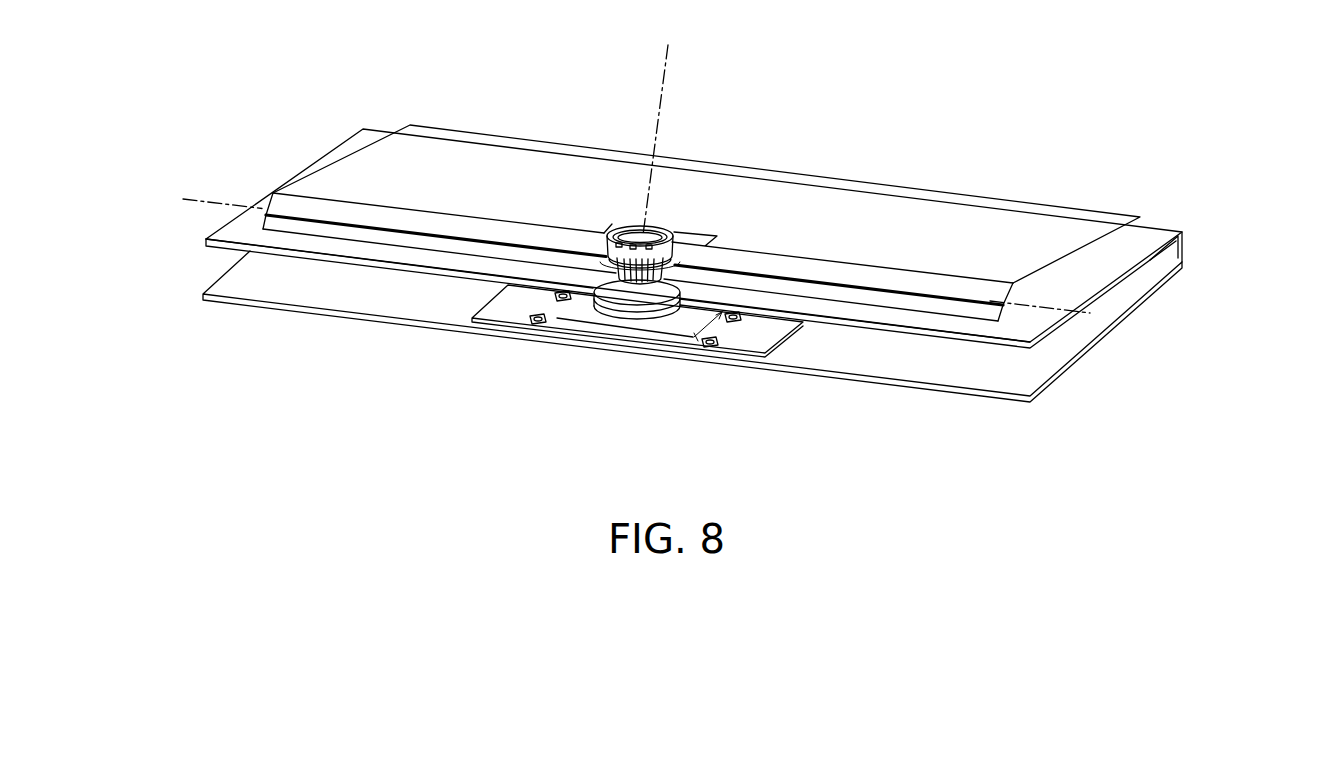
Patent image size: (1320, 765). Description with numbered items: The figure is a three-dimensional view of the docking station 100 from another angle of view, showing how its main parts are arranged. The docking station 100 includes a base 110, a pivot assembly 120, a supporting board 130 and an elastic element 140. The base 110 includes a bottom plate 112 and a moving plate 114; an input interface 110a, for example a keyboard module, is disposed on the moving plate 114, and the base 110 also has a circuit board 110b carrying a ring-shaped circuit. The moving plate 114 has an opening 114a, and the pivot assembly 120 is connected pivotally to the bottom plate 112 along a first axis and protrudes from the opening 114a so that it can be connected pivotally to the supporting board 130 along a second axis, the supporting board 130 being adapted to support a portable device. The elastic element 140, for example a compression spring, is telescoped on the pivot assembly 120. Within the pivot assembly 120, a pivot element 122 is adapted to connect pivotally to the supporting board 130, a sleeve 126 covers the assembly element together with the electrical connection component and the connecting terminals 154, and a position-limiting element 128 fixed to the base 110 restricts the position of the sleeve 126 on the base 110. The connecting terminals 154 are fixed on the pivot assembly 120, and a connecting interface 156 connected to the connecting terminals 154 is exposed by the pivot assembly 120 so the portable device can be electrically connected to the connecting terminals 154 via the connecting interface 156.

The docking station 100 is at (1137, 463).
The base 110 is at (733, 281).
The input interface 110a is at (1068, 270).
The circuit board 110b is at (756, 348).
The bottom plate 112 is at (692, 342).
The moving plate 114 is at (709, 267).
The opening 114a is at (660, 274).
The pivot assembly 120 is at (652, 262).
The pivot element 122 is at (633, 280).
The sleeve 126 is at (640, 260).
The position-limiting element 128 is at (716, 318).
The supporting board 130 is at (990, 216).
The elastic element 140 is at (640, 316).
The connecting terminals 154 is at (608, 268).
The connecting interface 156 is at (592, 252).